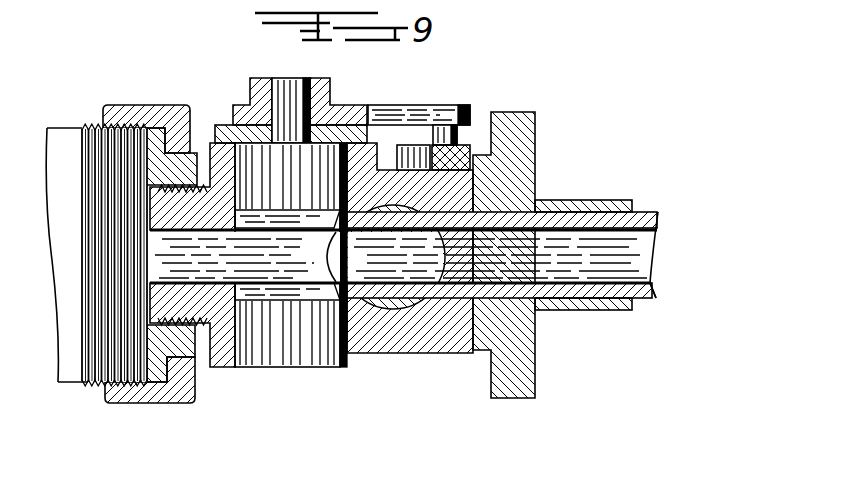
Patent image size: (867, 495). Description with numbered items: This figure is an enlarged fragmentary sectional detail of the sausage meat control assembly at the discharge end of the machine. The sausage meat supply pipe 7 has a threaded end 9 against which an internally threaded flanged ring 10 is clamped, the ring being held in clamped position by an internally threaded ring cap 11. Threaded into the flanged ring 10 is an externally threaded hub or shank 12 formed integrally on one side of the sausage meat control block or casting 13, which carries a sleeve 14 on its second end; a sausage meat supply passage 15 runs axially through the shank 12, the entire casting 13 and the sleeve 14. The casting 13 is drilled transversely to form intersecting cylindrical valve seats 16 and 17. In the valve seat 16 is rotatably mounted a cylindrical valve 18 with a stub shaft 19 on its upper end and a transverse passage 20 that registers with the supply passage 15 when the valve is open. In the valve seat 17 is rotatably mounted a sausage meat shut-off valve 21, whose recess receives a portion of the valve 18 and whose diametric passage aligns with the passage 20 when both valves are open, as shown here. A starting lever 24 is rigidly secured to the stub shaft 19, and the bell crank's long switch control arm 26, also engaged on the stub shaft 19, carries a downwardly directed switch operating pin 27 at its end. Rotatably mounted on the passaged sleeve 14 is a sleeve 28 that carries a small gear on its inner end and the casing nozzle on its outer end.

The sausage meat supply pipe 7 is at (62, 137).
The threaded end 9 is at (90, 124).
The internally threaded flanged ring 10 is at (201, 366).
The internally threaded ring cap 11 is at (172, 403).
The externally threaded hub or shank 12 is at (170, 300).
The sausage meat control block or casting 13 is at (368, 345).
The sleeve 14 is at (648, 298).
The sausage meat supply passage 15 is at (583, 232).
The cylindrical valve seat 16 is at (341, 364).
The cylindrical valve seat 17 is at (416, 305).
The cylindrical valve 18 is at (290, 350).
The stub shaft 19 is at (278, 80).
The transverse passage 20 is at (263, 263).
The sausage meat shut-off valve 21 is at (380, 208).
The starting lever 24 is at (215, 124).
The long switch control arm 26 is at (428, 108).
The switch operating pin 27 is at (460, 136).
The sleeve 28 is at (565, 200).